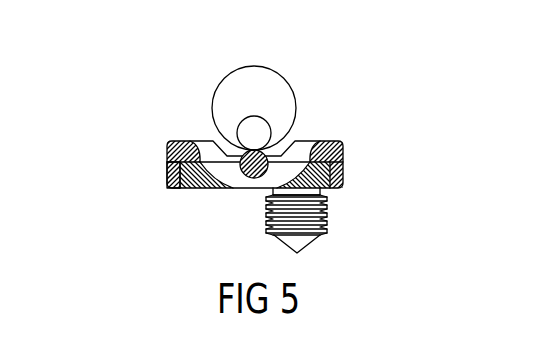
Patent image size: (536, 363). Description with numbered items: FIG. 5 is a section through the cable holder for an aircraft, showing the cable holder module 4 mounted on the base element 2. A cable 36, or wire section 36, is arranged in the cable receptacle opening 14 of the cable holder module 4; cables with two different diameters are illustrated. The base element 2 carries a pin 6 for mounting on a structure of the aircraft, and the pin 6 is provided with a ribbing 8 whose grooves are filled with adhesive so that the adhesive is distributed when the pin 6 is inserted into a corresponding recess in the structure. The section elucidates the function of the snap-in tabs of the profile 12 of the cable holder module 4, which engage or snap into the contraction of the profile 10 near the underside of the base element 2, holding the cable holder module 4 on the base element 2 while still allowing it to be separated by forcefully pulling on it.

The base element 2 is at (203, 189).
The cable holder module 4 is at (167, 156).
The pins 6 is at (298, 242).
The ribbing 8 is at (328, 208).
The profile 10 is at (322, 190).
The profile 12 is at (167, 177).
The cable receptacle opening 14 is at (290, 145).
The cable 36 is at (212, 108).